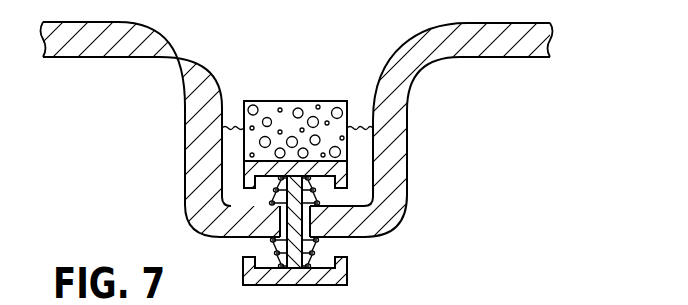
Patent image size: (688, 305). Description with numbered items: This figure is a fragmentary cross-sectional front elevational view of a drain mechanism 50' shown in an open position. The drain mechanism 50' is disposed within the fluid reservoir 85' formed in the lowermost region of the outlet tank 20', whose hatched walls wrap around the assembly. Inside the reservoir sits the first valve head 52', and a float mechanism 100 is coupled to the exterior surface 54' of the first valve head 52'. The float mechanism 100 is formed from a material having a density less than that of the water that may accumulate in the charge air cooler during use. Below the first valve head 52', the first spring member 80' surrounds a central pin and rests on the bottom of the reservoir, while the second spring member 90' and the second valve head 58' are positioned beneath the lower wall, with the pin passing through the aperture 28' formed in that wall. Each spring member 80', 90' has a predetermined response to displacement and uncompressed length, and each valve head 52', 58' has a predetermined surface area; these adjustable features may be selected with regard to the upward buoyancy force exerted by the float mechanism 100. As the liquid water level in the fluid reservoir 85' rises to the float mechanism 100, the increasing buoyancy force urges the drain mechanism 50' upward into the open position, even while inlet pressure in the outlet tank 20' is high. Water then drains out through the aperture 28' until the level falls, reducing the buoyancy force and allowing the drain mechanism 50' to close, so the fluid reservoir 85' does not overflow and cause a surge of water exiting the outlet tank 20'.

The outlet tank 20' is at (344, 150).
The fluid reservoir 85' is at (144, 156).
The aperture 28' is at (219, 221).
The float mechanism 100 is at (312, 105).
The exterior surface 54' is at (262, 102).
The first valve head 52' is at (370, 150).
The second valve head 58' is at (370, 150).
The first spring member 80' is at (330, 220).
The second spring member 90' is at (244, 253).
The drain mechanism 50' is at (344, 150).